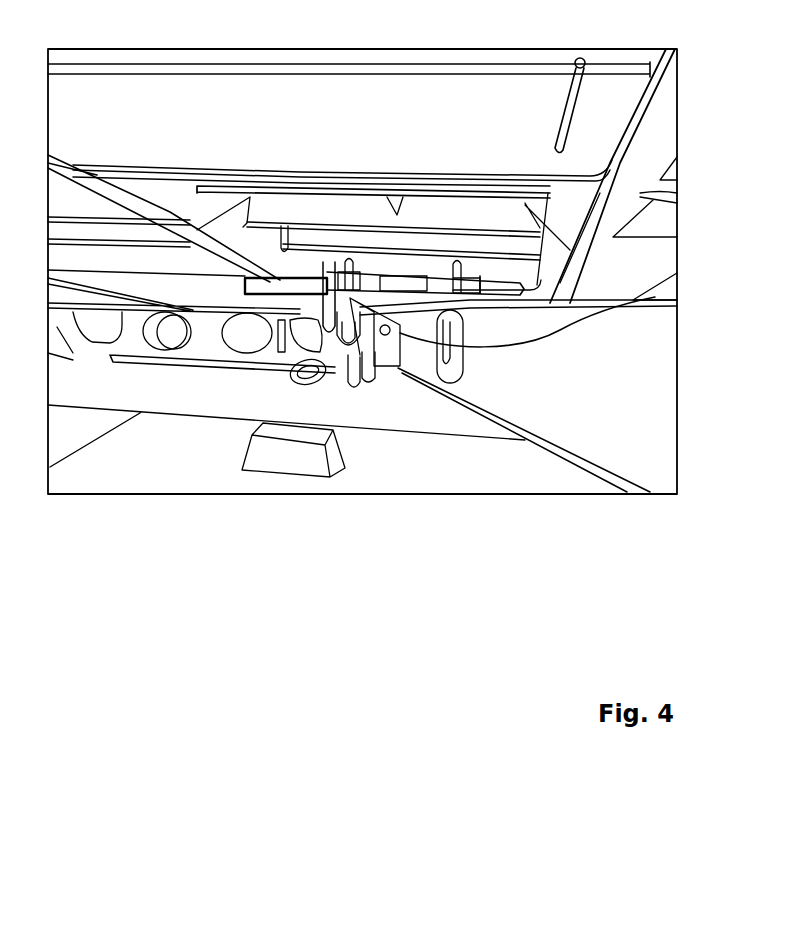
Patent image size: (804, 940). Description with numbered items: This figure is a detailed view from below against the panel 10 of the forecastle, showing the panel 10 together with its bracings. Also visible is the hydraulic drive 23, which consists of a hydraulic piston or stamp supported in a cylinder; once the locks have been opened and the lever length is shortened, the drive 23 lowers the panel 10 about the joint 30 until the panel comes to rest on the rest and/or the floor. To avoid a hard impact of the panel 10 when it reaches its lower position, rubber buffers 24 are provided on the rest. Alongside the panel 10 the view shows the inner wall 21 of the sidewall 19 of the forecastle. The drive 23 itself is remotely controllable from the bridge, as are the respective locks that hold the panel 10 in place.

The panel 10 is at (657, 135).
The sidewall 19 is at (647, 405).
The inner wall 21 is at (630, 362).
The hydraulic drive 23 is at (380, 377).
The rubber buffer 24 is at (330, 277).
The joint 30 is at (655, 297).